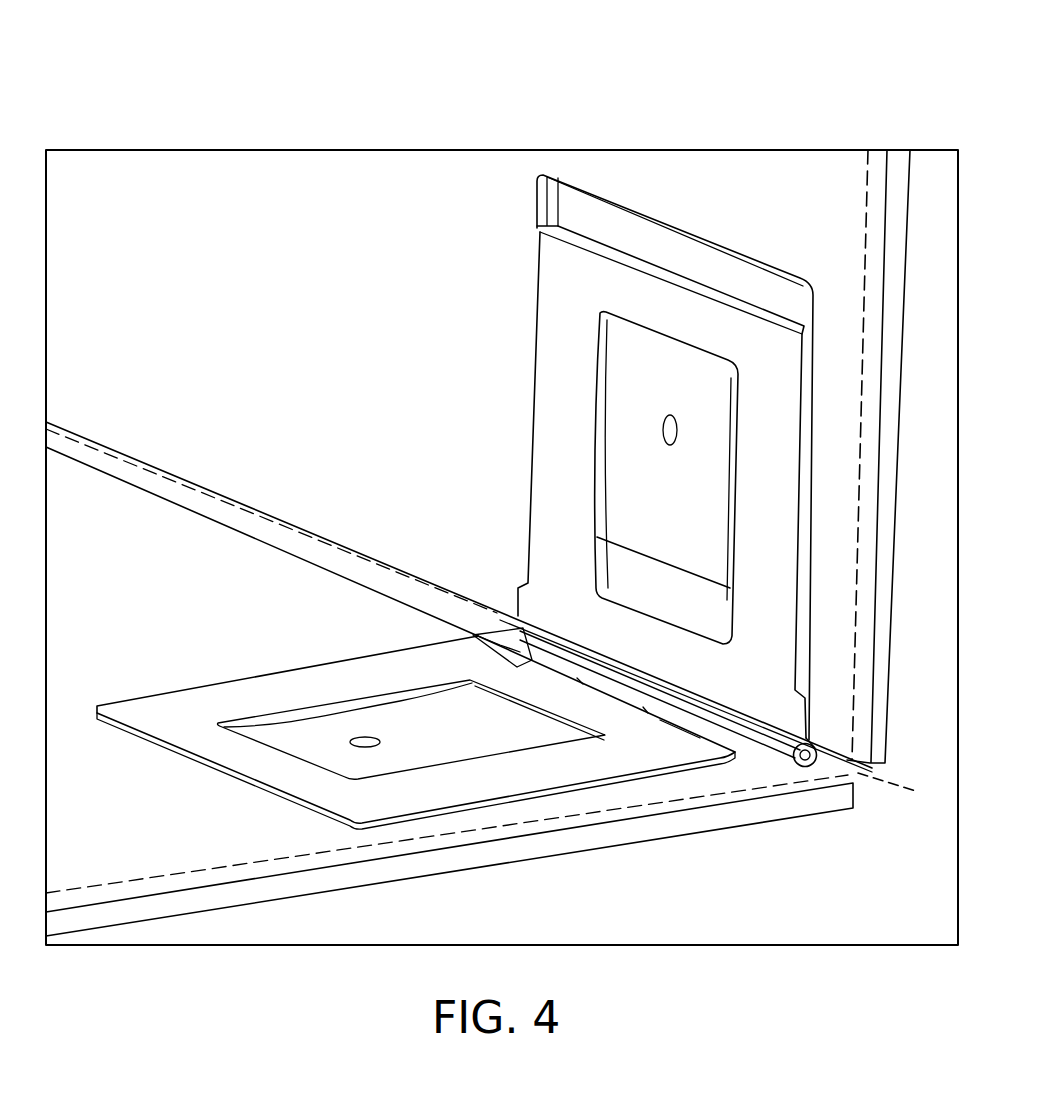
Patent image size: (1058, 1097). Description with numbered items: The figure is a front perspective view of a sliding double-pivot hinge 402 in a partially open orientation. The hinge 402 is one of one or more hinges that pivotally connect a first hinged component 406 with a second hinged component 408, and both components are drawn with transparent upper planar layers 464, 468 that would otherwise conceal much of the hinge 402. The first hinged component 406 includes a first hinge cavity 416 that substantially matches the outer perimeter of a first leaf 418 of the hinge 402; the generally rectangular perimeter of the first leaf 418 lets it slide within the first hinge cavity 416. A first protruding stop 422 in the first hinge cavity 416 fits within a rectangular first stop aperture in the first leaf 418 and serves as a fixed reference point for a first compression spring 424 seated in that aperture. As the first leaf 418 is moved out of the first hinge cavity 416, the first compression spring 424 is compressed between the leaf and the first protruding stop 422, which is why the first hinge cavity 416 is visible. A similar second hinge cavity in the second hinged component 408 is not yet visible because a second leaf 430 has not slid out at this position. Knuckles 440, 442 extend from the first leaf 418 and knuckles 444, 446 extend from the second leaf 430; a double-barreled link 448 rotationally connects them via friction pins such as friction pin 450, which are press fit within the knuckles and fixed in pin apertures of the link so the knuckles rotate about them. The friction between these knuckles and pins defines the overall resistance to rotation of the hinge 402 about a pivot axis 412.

The sliding double-pivot hinge 402 is at (402, 102).
The first hinged component 406 is at (437, 396).
The second hinged component 408 is at (339, 626).
The pivot axis 412 is at (918, 790).
The first hinge cavity 416 is at (723, 265).
The first leaf 418 is at (605, 289).
The first protruding stop 422 is at (685, 602).
The first compression spring 424 is at (684, 394).
The second leaf 430 is at (200, 722).
The knuckle 440 is at (790, 756).
The knuckle 442 is at (515, 622).
The knuckle 444 is at (748, 748).
The knuckle 446 is at (473, 637).
The double-barreled link 448 is at (688, 705).
The friction pin 450 is at (850, 781).
The upper planar layer 464 is at (873, 192).
The upper planar layer 468 is at (573, 820).